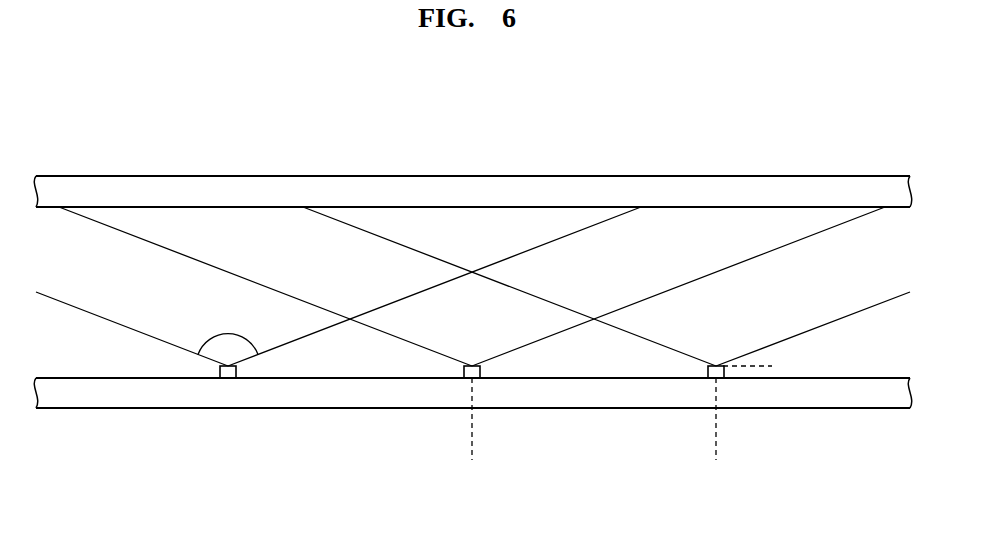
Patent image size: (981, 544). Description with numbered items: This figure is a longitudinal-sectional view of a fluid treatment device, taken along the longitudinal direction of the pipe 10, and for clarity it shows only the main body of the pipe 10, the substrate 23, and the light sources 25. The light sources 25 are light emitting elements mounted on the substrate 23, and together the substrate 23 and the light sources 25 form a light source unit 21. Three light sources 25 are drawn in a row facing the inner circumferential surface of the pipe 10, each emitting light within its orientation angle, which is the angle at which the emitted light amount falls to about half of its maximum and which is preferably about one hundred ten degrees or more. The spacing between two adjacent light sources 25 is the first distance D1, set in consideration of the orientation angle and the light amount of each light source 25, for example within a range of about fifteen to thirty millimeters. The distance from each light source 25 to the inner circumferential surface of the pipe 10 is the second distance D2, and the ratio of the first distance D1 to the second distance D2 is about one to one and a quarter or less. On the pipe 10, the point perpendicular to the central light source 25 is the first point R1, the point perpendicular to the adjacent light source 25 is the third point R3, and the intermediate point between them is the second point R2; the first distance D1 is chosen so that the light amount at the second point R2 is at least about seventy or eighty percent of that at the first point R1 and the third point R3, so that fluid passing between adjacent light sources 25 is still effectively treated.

The pipe 10 is at (160, 186).
The light source unit 21 is at (472, 363).
The substrate 23 is at (292, 398).
The light source 25 is at (228, 378).
The first point R1 is at (472, 176).
The second point R2 is at (594, 176).
The third point R3 is at (716, 176).
The first distance D1 is at (716, 450).
The second distance D2 is at (762, 207).